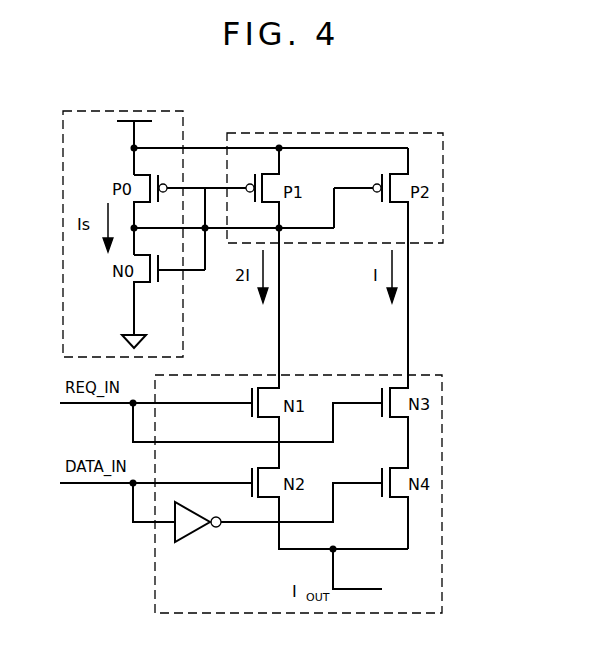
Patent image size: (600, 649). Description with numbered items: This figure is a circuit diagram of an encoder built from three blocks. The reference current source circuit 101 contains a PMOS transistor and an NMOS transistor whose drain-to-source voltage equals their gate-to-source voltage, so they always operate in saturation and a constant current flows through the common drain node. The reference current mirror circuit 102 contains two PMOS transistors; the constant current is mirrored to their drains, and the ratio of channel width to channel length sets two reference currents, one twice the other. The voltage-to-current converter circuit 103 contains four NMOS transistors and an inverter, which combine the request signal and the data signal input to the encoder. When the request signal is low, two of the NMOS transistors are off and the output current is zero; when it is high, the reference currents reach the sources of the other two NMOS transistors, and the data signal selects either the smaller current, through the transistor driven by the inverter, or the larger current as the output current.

The reference current source circuit 101 is at (139, 111).
The reference current mirror circuit 102 is at (393, 133).
The voltage-to-current converter circuit 103 is at (425, 375).